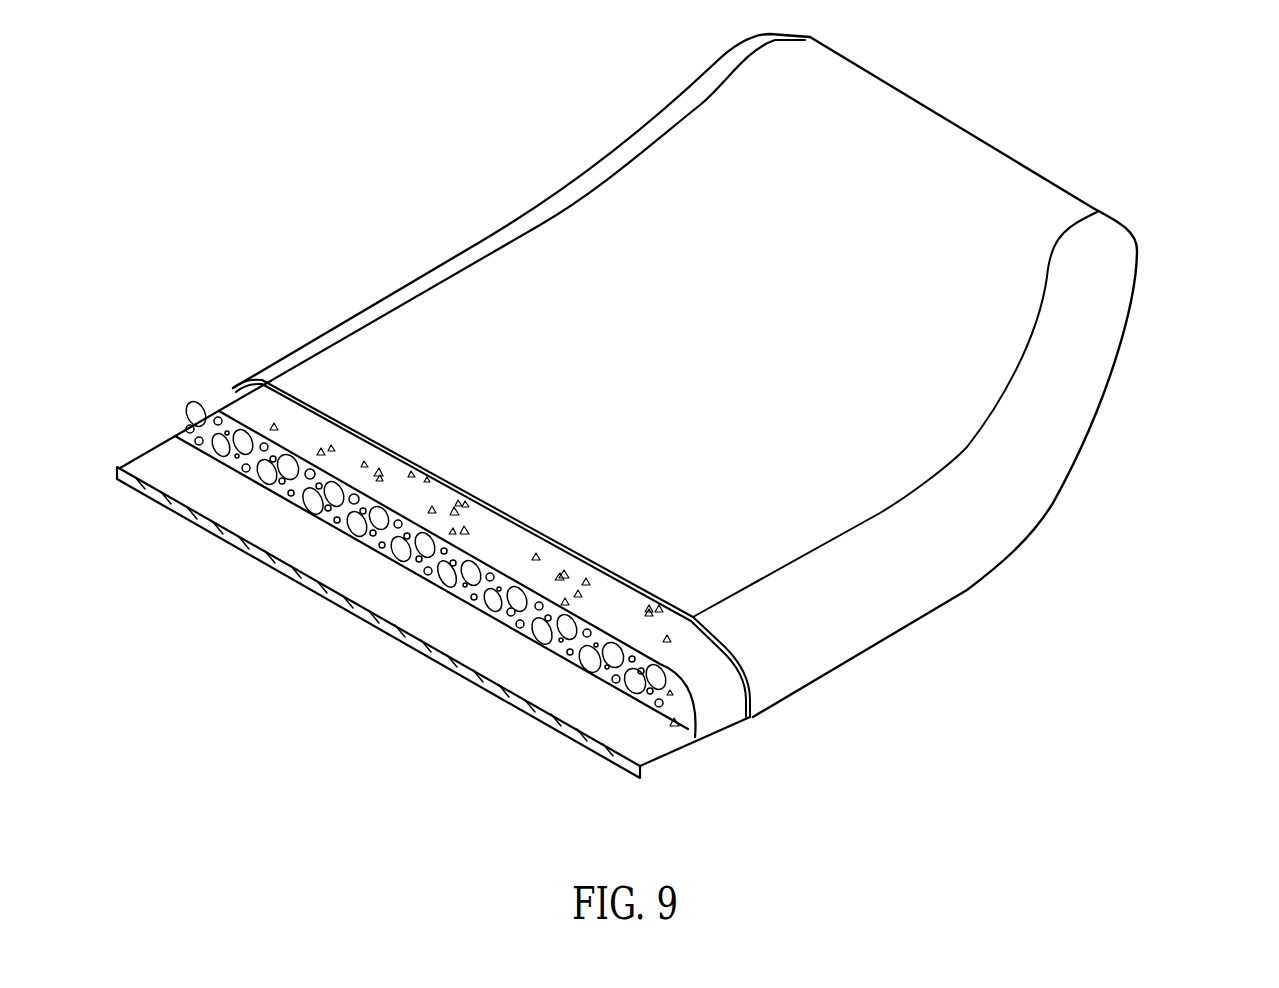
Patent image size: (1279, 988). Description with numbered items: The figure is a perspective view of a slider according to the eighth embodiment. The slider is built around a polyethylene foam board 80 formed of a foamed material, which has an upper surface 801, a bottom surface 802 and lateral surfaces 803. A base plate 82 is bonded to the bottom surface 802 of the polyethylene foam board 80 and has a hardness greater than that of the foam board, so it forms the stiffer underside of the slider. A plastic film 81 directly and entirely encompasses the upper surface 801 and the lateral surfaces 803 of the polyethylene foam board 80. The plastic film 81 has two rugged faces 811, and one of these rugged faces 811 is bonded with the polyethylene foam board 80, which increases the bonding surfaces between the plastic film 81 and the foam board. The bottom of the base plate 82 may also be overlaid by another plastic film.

The polyethylene foam board 80 is at (190, 432).
The plastic film 81 is at (293, 362).
The base plate 82 is at (370, 603).
The upper surface 801 is at (550, 588).
The bottom surface 802 is at (657, 712).
The lateral surfaces 803 is at (710, 702).
The rugged faces 811 is at (980, 315).